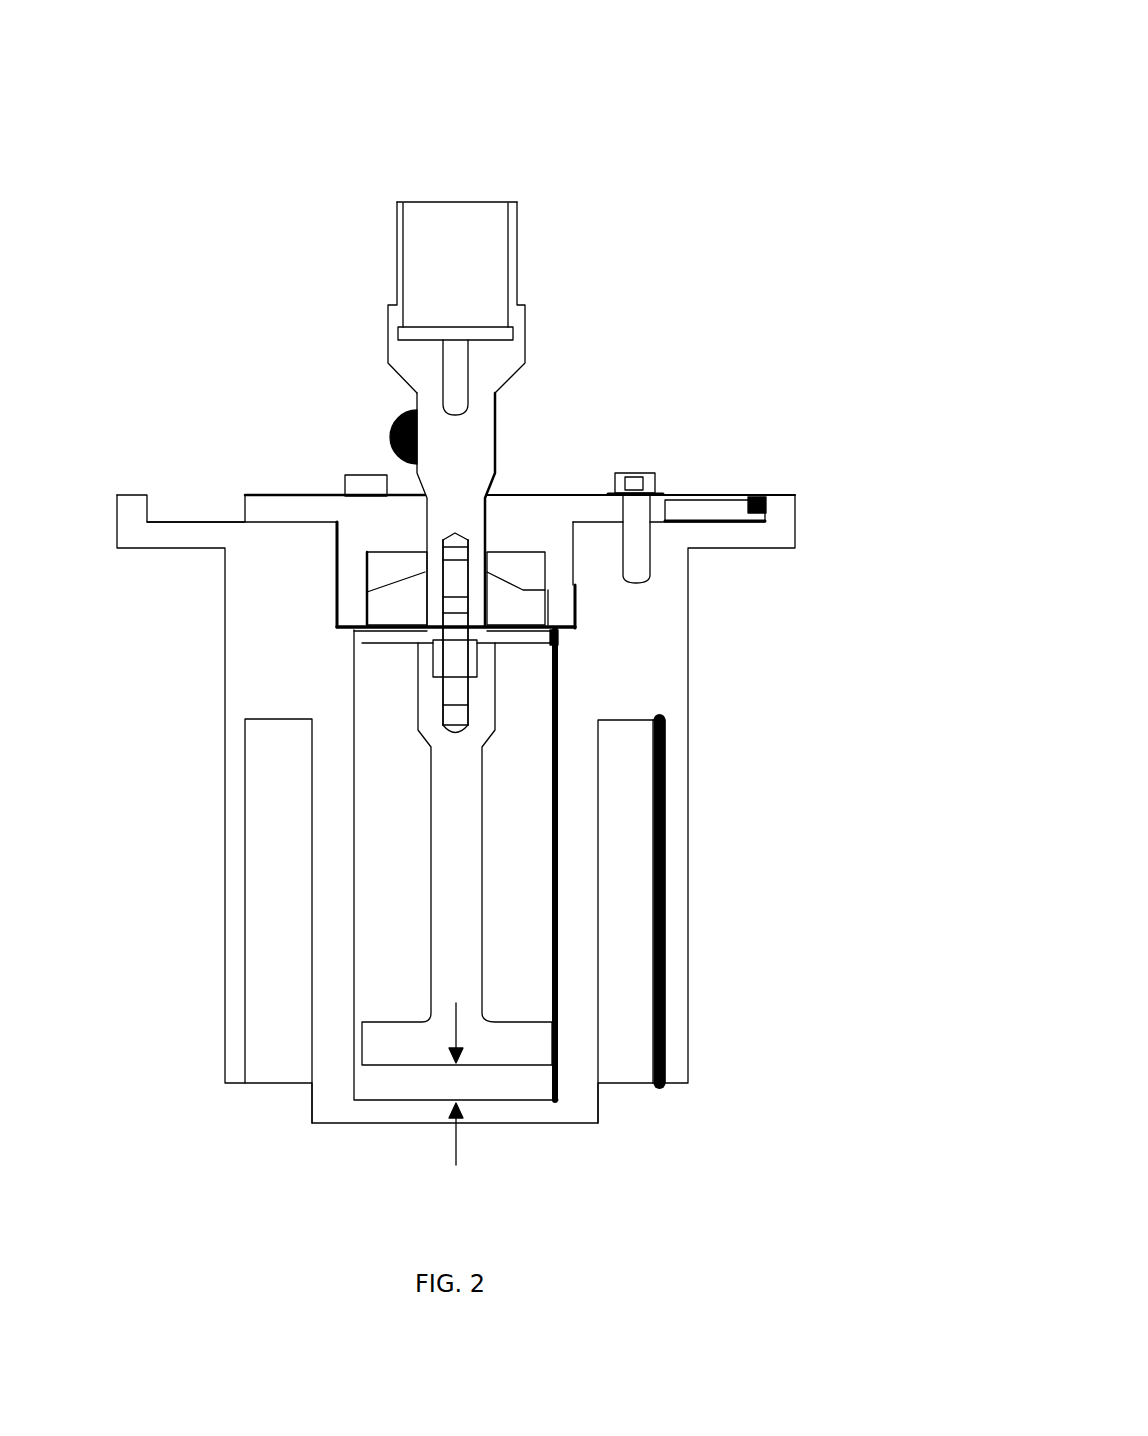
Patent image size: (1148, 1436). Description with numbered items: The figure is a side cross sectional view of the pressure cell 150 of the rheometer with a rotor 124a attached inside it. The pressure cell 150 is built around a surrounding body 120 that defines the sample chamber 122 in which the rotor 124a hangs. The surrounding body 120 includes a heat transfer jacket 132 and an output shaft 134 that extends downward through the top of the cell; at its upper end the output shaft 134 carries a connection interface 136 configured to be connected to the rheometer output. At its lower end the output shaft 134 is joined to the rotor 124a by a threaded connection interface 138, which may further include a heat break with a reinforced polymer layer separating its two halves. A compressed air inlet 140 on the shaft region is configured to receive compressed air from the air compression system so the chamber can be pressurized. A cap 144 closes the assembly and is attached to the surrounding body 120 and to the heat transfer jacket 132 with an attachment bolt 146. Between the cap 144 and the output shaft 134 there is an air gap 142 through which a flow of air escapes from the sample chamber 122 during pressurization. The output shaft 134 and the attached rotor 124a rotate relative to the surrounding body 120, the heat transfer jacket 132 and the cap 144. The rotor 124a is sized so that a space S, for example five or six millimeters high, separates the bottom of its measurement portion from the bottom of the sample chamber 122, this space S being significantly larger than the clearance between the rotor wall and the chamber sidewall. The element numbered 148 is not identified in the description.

The pressure cell 150 is at (818, 85).
The connection interface 136 is at (463, 245).
The output shaft 134 is at (482, 433).
The compressed air inlet 140 is at (387, 428).
The air gap 142 is at (490, 513).
The cap 144 is at (562, 508).
The attachment bolt 146 is at (650, 482).
The heat transfer jacket 132 is at (668, 665).
The sample chamber 122 is at (395, 763).
The seal cup 148 is at (523, 609).
The surrounding body 120 is at (580, 1028).
The rotor 124a is at (462, 805).
The threaded connection interface 138 is at (455, 655).
The space S is at (458, 1080).